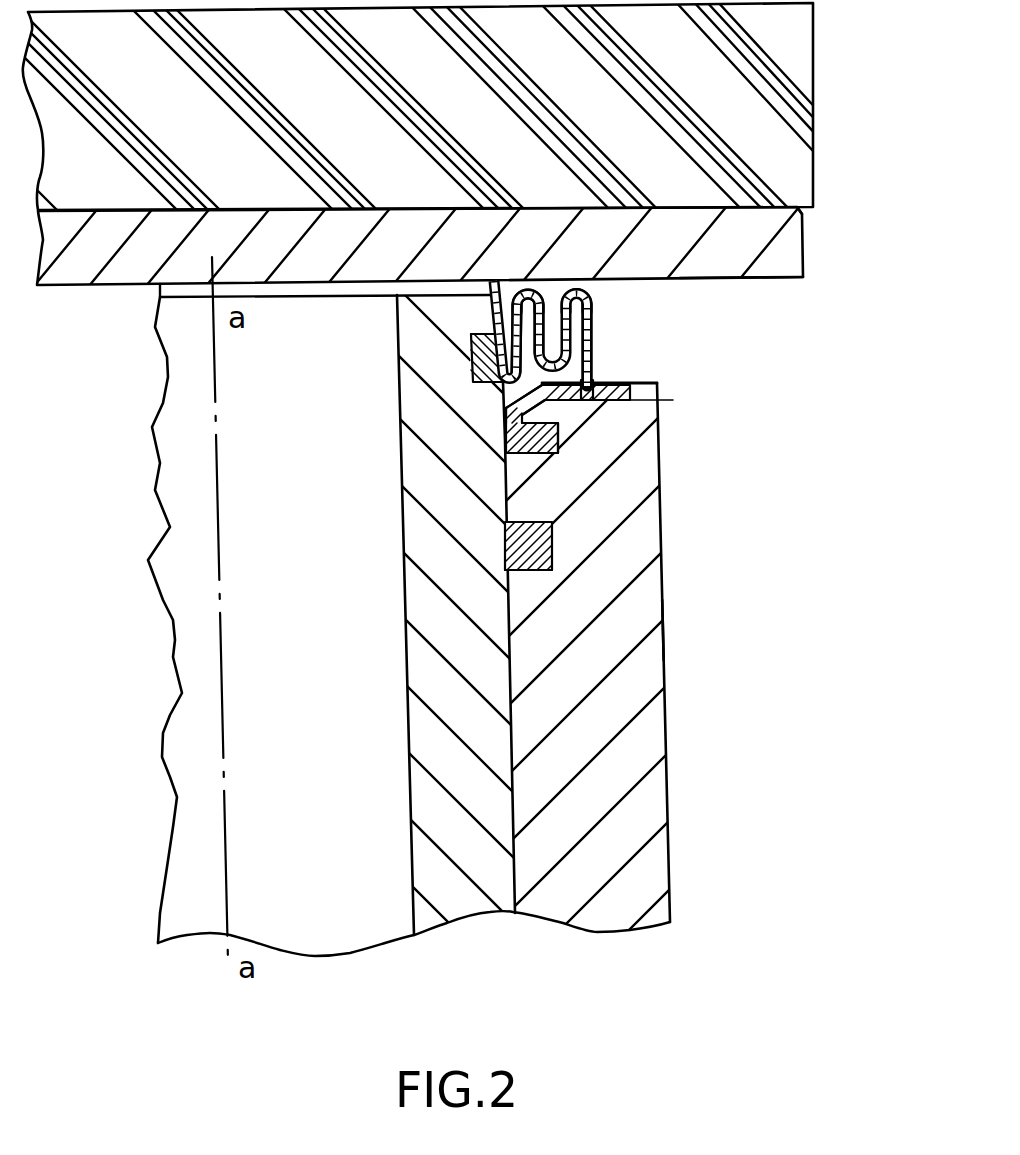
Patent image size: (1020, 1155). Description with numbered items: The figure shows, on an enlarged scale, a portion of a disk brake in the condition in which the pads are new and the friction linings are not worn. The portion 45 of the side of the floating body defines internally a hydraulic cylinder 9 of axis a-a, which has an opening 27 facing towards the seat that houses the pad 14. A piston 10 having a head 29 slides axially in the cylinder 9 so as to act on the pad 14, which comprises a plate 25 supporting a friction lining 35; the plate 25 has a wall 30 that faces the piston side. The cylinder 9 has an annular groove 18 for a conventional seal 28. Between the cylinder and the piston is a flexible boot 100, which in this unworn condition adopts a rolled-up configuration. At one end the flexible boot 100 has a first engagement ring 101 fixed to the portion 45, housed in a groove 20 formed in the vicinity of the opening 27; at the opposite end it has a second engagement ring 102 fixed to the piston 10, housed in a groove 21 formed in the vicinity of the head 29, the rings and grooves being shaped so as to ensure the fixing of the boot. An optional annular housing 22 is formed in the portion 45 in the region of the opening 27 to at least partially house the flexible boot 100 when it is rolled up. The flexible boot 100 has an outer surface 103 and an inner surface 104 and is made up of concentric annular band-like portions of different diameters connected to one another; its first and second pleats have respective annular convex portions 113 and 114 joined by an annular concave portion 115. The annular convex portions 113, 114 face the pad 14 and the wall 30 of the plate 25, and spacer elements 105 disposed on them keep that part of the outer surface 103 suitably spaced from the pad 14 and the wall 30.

The friction lining 35 is at (813, 93).
The plate 25 is at (760, 229).
The pad 14 is at (808, 212).
The wall 30 is at (742, 279).
The head 29 is at (185, 340).
The hydraulic cylinder 9 is at (512, 798).
The piston 10 is at (463, 903).
The portion of the side of the floating body 45 is at (668, 628).
The groove 20 is at (562, 449).
The inner surface 104 is at (507, 409).
The first engagement ring 101 is at (544, 456).
The opening 27 is at (648, 378).
The annular housing 22 is at (612, 390).
The annular groove 18 is at (553, 538).
The seal 28 is at (553, 568).
The second engagement ring 102 is at (470, 360).
The groove 21 is at (472, 333).
The annular concave portion 115 is at (590, 382).
The spacer element 105 is at (510, 281).
The annular convex portion 113 is at (535, 281).
The annular convex portion 114 is at (517, 281).
The outer surface 103 is at (588, 306).
The flexible boot 100 is at (593, 330).